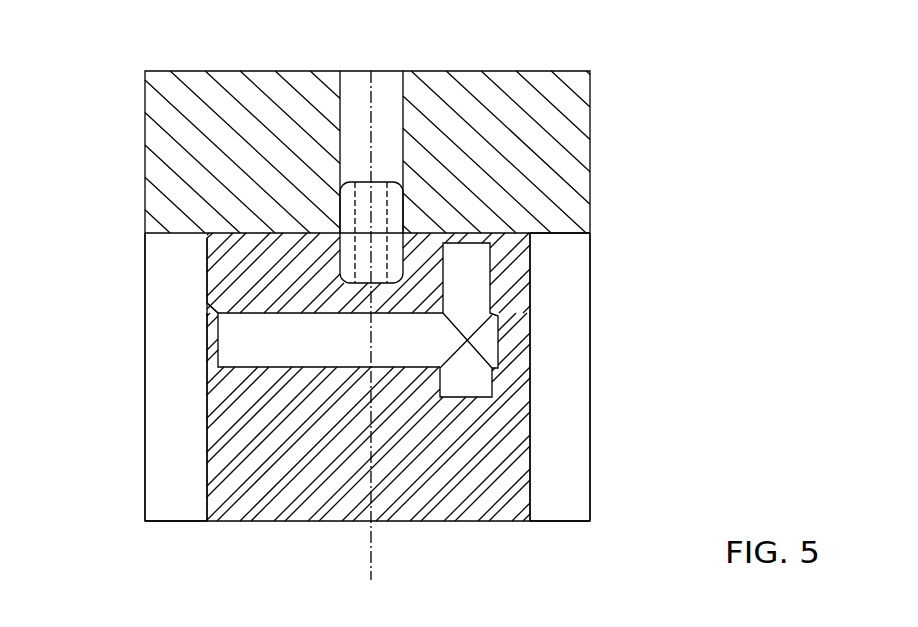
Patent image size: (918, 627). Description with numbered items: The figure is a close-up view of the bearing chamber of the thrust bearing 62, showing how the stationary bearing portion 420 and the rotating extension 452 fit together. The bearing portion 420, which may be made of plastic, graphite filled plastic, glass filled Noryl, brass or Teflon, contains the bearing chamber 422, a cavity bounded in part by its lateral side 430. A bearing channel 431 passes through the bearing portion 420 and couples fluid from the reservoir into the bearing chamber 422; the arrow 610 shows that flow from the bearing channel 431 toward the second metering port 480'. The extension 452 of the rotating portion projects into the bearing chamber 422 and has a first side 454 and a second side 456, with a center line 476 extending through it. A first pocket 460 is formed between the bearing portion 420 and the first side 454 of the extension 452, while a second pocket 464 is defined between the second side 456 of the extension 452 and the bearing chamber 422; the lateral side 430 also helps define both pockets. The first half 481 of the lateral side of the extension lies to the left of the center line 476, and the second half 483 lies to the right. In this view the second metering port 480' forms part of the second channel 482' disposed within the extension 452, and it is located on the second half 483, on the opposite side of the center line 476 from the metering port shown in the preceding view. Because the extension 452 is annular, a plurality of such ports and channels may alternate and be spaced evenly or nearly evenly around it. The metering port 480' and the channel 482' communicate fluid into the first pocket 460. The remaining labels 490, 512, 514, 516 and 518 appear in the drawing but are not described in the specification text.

The thrust bearing 62 is at (708, 94).
The bearing chamber 422 is at (575, 108).
The bearing channel 431 is at (393, 168).
The arrow 610 is at (371, 68).
The center line 476 is at (372, 545).
The fastener 490 is at (362, 268).
The bearing portion 420 is at (592, 232).
The first half 481 is at (287, 247).
The second half 483 is at (513, 263).
The lateral side 430 is at (566, 236).
The left gap 512 is at (178, 262).
The right gap 514 is at (561, 264).
The second metering port 480' is at (553, 320).
The second channel 482' is at (330, 443).
The extension 452 is at (517, 435).
The first pocket 460 is at (160, 418).
The second pocket 464 is at (583, 360).
The first side 454 is at (170, 492).
The second side 456 is at (562, 500).
The left flow direction 516 is at (110, 520).
The right flow direction 518 is at (624, 521).